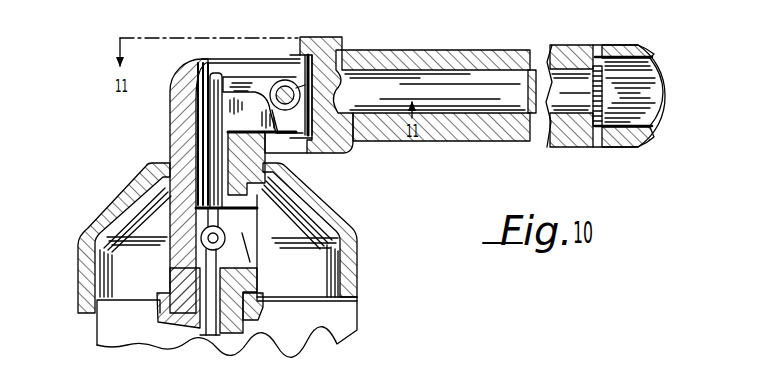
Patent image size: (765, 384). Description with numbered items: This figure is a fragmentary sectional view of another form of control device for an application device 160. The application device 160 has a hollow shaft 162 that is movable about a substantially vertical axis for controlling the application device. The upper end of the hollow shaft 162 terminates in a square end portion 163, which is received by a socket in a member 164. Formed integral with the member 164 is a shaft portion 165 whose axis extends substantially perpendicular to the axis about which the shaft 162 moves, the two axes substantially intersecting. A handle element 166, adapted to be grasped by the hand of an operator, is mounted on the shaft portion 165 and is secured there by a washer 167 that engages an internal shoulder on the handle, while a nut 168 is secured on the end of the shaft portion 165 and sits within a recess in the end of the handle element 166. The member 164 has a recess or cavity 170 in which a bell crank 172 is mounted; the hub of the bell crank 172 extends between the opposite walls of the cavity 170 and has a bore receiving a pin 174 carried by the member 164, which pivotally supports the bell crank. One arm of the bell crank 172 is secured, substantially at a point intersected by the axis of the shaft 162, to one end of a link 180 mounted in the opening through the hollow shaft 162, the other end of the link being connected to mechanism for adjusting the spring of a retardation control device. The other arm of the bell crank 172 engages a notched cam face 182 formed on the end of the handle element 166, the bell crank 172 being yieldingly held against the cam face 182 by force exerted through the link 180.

The application device 160 is at (362, 320).
The hollow shaft 162 is at (173, 262).
The square end portion 163 is at (183, 153).
The member 164 is at (170, 122).
The shaft portion 165 is at (461, 104).
The handle element 166 is at (392, 52).
The washer 167 is at (596, 66).
The nut 168 is at (623, 87).
The recess or cavity 170 is at (242, 66).
The bell crank 172 is at (258, 82).
The pin 174 is at (350, 30).
The link 180 is at (198, 59).
The notched cam face 182 is at (296, 46).